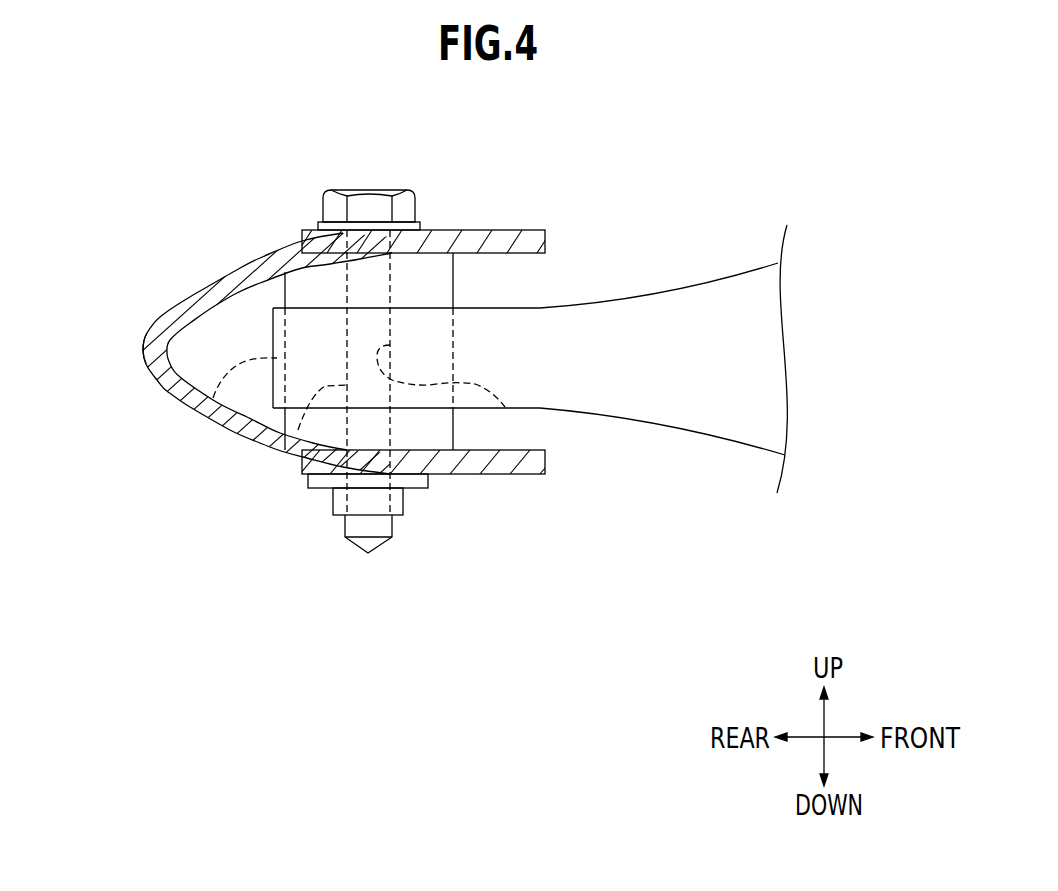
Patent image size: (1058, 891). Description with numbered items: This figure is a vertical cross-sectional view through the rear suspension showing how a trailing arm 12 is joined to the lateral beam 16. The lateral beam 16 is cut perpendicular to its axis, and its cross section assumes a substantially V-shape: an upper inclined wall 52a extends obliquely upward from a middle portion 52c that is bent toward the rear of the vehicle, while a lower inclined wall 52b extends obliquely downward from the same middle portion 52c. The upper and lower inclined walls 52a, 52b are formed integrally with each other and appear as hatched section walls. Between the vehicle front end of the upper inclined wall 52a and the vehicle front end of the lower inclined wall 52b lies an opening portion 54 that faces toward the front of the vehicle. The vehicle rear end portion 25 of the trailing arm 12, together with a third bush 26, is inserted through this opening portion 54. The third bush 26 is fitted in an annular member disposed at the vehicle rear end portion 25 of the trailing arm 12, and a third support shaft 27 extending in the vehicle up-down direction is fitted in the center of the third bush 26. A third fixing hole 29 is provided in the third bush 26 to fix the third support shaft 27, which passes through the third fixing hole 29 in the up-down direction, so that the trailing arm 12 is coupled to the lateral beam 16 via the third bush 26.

The trailing arm 12 is at (685, 282).
The lateral beam 16 is at (220, 262).
The vehicle rear end portion 25 is at (202, 414).
The third bush 26 is at (462, 280).
The third support shaft 27 is at (297, 433).
The third fixing hole 29 is at (505, 408).
The upper inclined wall 52a is at (438, 232).
The lower inclined wall 52b is at (445, 476).
The middle portion 52c is at (148, 347).
The opening portion 54 is at (514, 259).